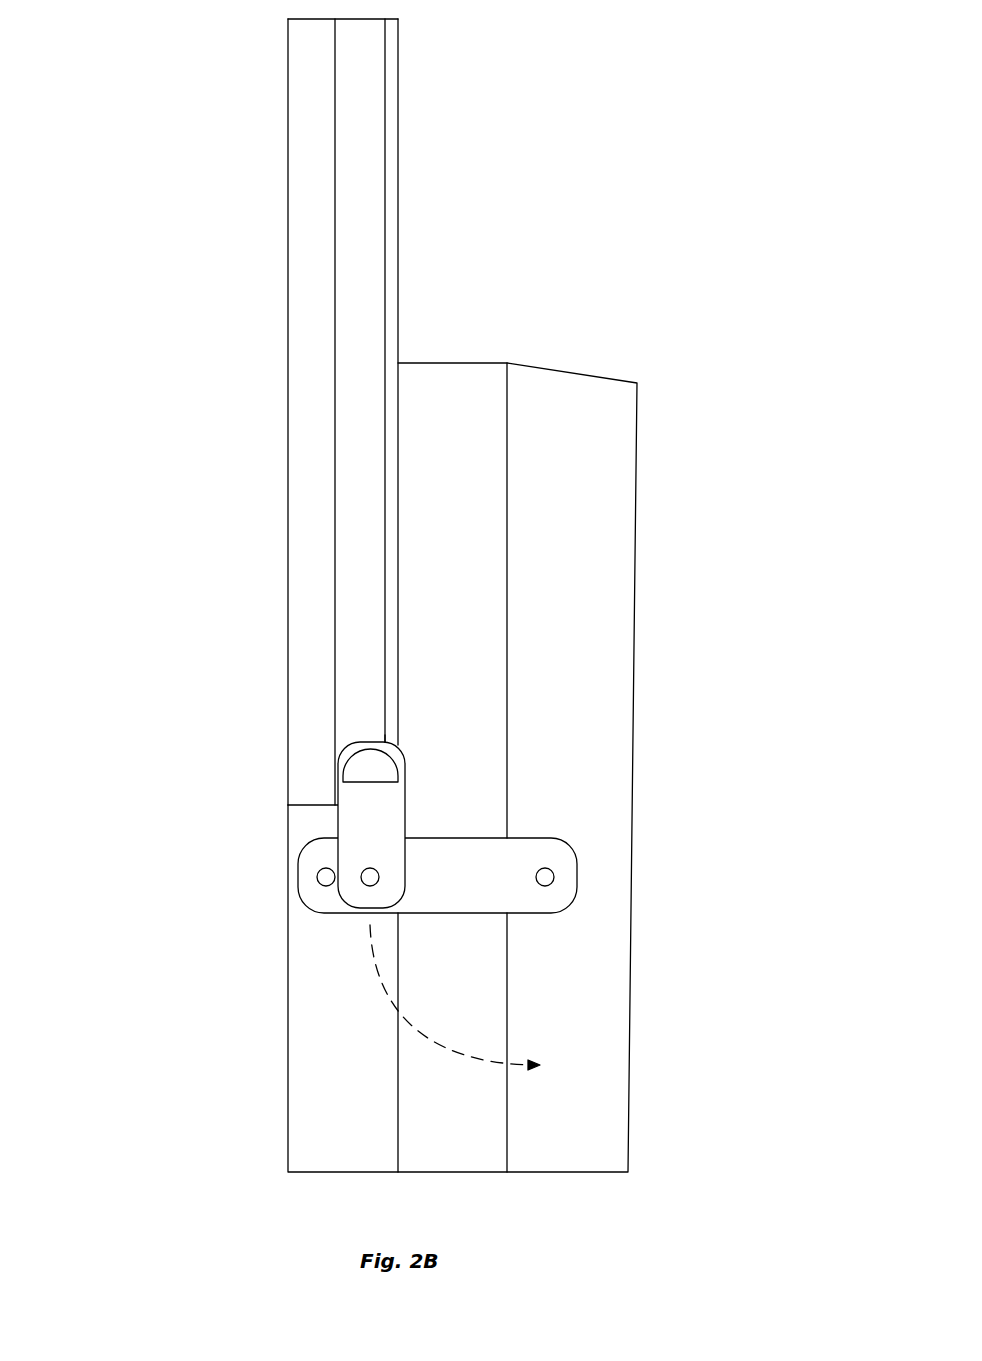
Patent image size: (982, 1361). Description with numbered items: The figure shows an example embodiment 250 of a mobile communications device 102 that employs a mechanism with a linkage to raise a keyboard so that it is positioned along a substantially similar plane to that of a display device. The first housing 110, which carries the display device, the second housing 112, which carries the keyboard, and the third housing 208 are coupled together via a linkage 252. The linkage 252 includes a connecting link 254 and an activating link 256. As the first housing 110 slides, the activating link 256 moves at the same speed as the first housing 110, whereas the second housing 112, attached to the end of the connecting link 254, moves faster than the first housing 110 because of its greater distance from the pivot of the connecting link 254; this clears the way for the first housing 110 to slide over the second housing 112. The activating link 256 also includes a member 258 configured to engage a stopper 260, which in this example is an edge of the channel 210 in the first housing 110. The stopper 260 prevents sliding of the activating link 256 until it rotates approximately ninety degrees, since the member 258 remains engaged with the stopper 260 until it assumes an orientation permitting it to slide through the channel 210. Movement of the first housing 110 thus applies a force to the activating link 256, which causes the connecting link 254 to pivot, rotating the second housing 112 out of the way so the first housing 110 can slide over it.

The example embodiment 250 is at (178, 70).
The electronic device 102 is at (652, 217).
The first housing 110 is at (288, 385).
The second housing 112 is at (288, 1050).
The channel 210 is at (352, 638).
The third housing 208 is at (633, 685).
The linkage 252 is at (236, 835).
The connecting link 254 is at (474, 886).
The activating link 256 is at (389, 836).
The member 258 is at (343, 765).
The stopper 260 is at (385, 735).